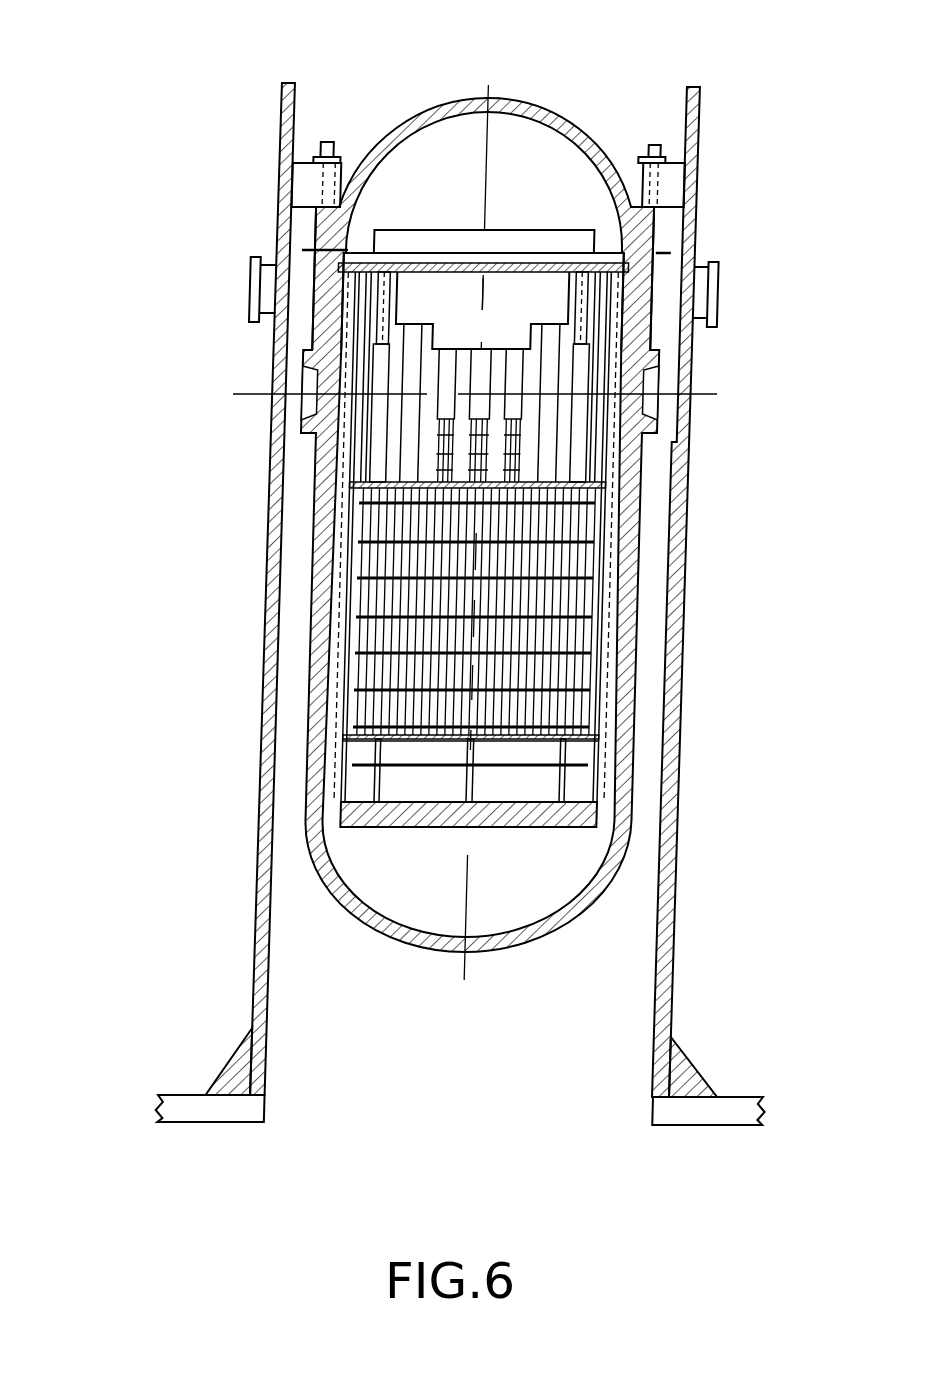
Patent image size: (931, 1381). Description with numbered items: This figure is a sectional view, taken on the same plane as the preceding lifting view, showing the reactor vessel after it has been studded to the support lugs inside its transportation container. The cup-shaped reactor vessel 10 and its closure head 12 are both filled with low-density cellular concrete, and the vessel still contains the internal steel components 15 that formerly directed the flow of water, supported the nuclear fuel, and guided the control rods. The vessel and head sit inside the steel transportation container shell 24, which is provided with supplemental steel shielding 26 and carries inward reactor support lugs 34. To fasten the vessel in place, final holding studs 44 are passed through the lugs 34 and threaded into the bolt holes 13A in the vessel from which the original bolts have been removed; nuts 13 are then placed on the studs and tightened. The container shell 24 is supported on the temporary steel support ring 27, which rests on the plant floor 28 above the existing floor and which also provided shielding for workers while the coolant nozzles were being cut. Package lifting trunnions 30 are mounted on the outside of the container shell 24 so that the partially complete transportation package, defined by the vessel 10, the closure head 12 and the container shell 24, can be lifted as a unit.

The reactor vessel 10 is at (428, 950).
The closure head 12 is at (667, 233).
The nuts 13 is at (348, 147).
The bolt holes 13A is at (310, 225).
The internal steel components 15 is at (393, 635).
The transportation container shell 24 is at (690, 570).
The supplemental steel shielding 26 is at (277, 813).
The temporary support ring 27 is at (692, 1058).
The plant floor 28 is at (180, 1092).
The package lifting trunnions 30 is at (248, 287).
The reactor support lugs 34 is at (665, 188).
The final holding studs 44 is at (652, 138).